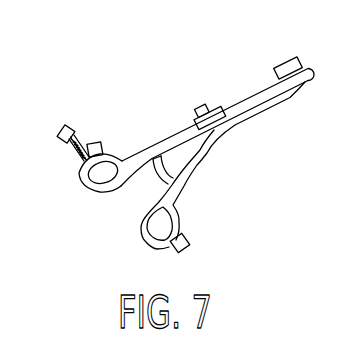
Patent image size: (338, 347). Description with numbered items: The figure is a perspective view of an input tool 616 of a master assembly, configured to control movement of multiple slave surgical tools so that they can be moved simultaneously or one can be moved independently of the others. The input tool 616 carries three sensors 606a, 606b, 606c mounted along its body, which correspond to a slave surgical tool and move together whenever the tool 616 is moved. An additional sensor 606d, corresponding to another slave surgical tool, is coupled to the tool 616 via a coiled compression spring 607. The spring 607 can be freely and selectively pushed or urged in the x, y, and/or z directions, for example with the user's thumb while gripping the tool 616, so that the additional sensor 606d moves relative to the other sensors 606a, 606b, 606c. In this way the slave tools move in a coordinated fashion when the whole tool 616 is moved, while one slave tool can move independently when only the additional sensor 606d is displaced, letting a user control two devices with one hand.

The input tool 616 is at (159, 112).
The sensor 606a is at (95, 143).
The sensor 606b is at (188, 244).
The sensor 606c is at (278, 62).
The additional sensor 606d is at (63, 128).
The coiled compression spring 607 is at (77, 152).